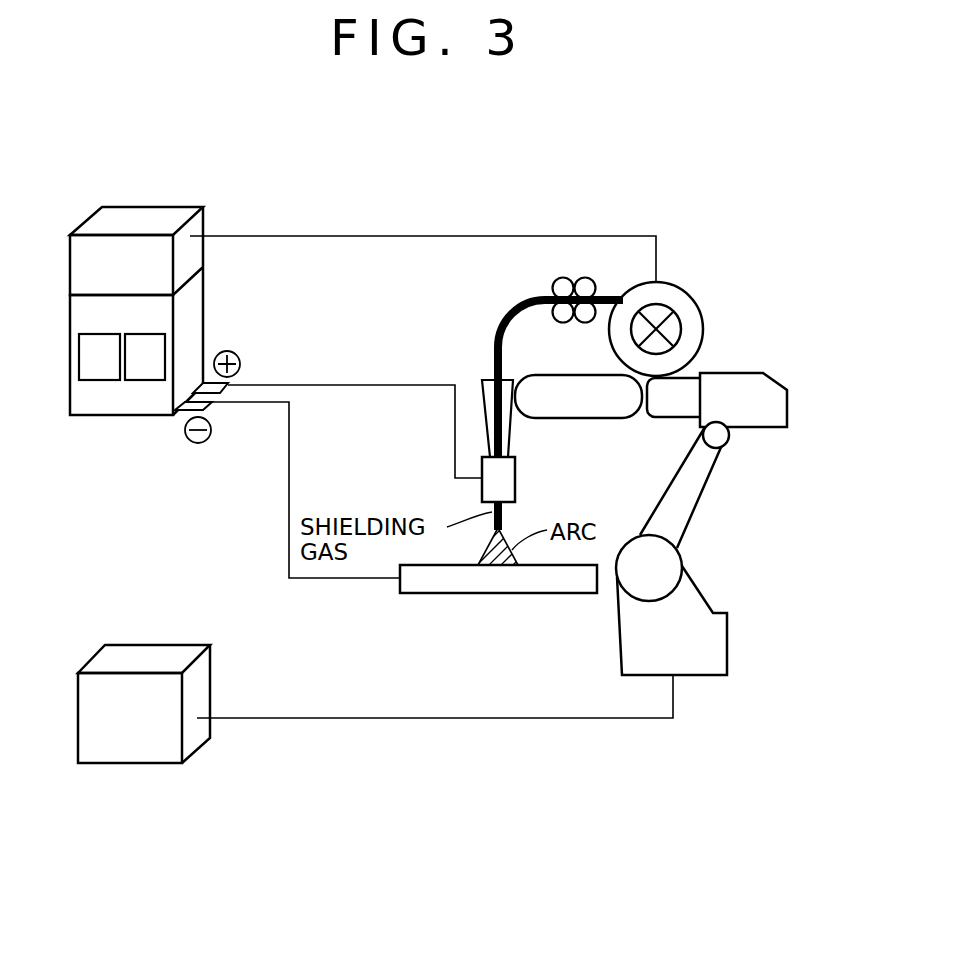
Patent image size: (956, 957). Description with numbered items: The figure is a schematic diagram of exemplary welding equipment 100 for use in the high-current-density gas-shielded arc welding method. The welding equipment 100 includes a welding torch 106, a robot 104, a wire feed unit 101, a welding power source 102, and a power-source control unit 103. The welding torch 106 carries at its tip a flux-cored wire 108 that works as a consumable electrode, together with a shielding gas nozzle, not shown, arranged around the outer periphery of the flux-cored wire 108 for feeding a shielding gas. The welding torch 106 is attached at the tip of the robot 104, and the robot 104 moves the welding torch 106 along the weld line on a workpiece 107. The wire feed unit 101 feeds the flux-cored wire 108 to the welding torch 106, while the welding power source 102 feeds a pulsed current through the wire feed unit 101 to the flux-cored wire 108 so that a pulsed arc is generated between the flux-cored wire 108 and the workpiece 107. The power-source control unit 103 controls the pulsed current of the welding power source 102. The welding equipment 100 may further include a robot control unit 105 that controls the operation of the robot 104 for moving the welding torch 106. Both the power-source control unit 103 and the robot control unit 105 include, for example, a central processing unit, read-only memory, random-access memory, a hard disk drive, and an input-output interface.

The welding equipment 100 is at (711, 189).
The wire feed unit 101 is at (697, 295).
The welding power source 102 is at (110, 417).
The power-source control unit 103 is at (145, 205).
The robot 104 is at (723, 457).
The robot control unit 105 is at (130, 767).
The welding torch 106 is at (517, 473).
The workpiece 107 is at (483, 597).
The flux-cored wire 108 is at (495, 338).